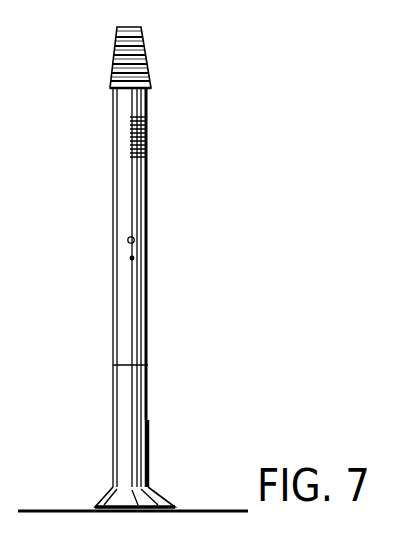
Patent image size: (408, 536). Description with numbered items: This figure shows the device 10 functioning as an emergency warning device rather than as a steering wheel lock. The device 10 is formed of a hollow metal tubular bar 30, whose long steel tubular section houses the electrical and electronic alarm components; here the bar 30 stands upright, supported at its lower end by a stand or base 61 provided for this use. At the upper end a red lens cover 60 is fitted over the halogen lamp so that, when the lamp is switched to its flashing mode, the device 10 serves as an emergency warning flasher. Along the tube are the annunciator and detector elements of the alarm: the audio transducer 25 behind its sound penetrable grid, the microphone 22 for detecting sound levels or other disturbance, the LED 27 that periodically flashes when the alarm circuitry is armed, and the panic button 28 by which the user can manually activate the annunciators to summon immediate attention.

The device 10 is at (190, 177).
The microphone 22 is at (148, 168).
The audio transducer 25 is at (150, 120).
The LED 27 is at (134, 258).
The panic button 28 is at (135, 240).
The tubular bar 30 is at (147, 312).
The red lens cover 60 is at (151, 49).
The base 61 is at (160, 491).